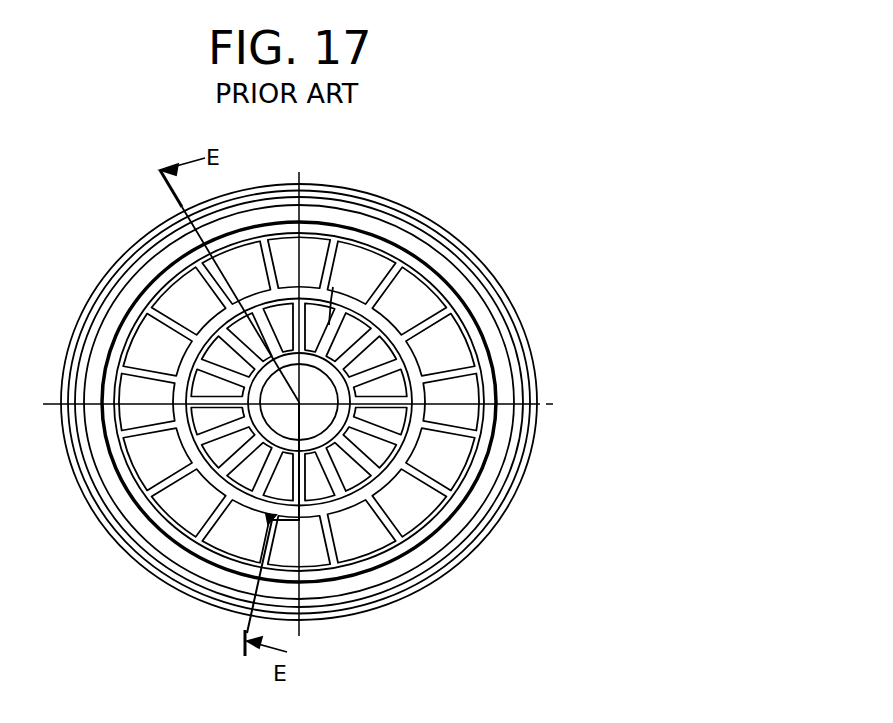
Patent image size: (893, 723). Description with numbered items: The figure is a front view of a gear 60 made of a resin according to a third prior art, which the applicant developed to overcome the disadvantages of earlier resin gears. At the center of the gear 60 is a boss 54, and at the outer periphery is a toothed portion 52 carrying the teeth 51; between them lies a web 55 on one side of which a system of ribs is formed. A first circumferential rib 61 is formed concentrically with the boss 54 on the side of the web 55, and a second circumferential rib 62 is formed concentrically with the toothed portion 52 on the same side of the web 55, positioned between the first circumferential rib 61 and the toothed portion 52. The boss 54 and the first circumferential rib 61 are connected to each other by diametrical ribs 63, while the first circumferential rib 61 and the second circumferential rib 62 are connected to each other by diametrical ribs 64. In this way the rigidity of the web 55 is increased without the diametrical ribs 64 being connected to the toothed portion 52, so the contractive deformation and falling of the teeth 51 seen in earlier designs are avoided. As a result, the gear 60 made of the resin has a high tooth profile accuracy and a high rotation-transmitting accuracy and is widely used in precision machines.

The gear made of a resin 60 is at (321, 396).
The teeth 51 is at (515, 307).
The toothed portion 52 is at (520, 358).
The boss 54 is at (235, 447).
The web 55 is at (415, 515).
The first circumferential rib 61 is at (462, 459).
The second circumferential rib 62 is at (493, 416).
The diametrical ribs 63 is at (333, 287).
The diametrical ribs 64 is at (445, 303).